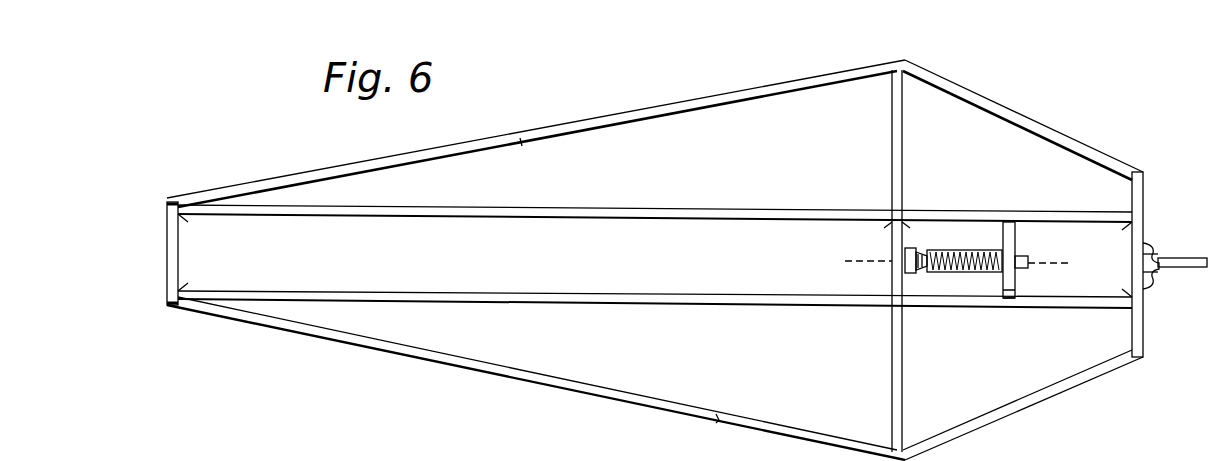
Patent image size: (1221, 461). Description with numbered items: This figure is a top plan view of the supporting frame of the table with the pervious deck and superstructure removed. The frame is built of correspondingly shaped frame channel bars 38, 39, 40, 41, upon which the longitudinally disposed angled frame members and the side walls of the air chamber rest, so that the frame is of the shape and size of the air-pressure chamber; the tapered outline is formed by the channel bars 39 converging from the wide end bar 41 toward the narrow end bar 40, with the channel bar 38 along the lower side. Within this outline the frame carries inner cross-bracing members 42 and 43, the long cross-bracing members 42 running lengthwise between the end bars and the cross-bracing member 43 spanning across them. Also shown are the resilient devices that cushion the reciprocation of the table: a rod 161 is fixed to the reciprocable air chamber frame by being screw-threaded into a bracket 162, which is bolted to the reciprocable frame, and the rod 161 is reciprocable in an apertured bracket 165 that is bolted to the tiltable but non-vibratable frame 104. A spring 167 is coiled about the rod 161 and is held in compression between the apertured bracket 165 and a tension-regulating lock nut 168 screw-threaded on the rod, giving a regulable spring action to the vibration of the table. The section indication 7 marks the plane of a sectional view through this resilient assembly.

The section line 7- 7 is at (847, 265).
The frame channel bar 38 is at (648, 405).
The frame channel bar 39 is at (582, 103).
The frame channel bar 40 is at (172, 237).
The frame channel bar 41 is at (1145, 216).
The inner cross-bracing member 42 is at (716, 297).
The inner cross-bracing member 43 is at (890, 352).
The frame 104 is at (1021, 296).
The rod 161 is at (1016, 254).
The bracket 162 is at (892, 278).
The apertured bracket 165 is at (1016, 270).
The spring 167 is at (961, 285).
The tension-regulating lock nut 168 is at (923, 252).